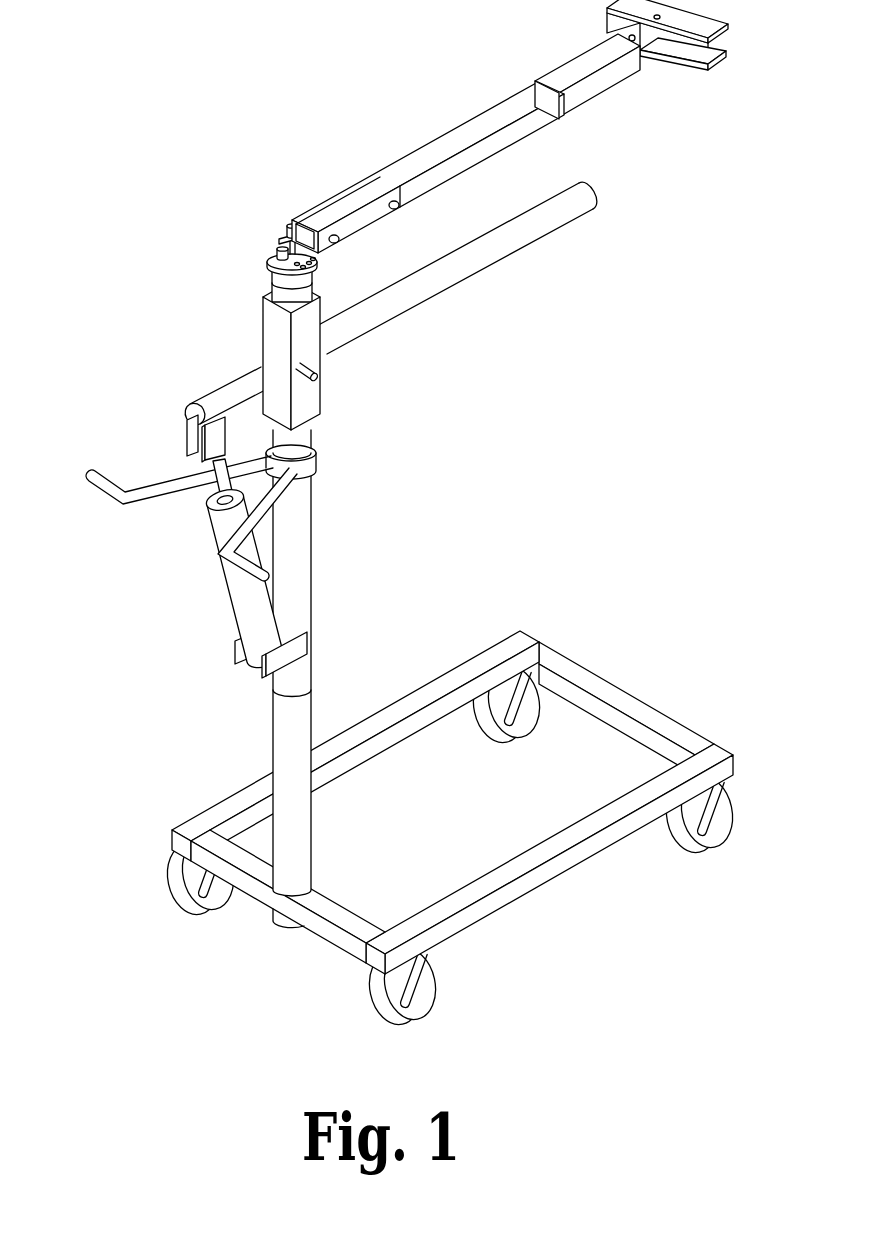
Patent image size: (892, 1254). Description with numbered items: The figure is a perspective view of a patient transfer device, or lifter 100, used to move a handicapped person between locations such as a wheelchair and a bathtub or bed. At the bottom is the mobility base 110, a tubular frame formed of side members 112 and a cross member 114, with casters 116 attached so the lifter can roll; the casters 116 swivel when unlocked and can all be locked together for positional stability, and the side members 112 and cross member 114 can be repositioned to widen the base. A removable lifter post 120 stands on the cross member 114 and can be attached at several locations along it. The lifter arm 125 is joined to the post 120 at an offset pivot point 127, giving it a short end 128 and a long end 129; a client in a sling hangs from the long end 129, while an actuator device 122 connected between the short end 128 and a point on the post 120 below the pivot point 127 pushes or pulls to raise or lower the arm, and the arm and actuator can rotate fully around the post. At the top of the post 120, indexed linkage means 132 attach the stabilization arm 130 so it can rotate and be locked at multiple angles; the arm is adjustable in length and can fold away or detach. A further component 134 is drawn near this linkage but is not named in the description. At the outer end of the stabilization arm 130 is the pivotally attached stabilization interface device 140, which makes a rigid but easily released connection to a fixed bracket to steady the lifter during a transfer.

The lifter 100 is at (146, 142).
The mobility base 110 is at (393, 838).
The side members 112 is at (398, 690).
The cross member 114 is at (310, 937).
The casters 116 is at (542, 706).
The lifter post 120 is at (272, 730).
The actuator device 122 is at (233, 592).
The lifter arm 125 is at (596, 188).
The offset pivot point 127 is at (320, 375).
The short end 128 is at (232, 386).
The long end 129 is at (530, 236).
The stabilization arm 130 is at (358, 152).
The indexed linkage means 132 is at (270, 255).
The pivot bolt 134 is at (278, 237).
The stabilization interface device 140 is at (613, 21).